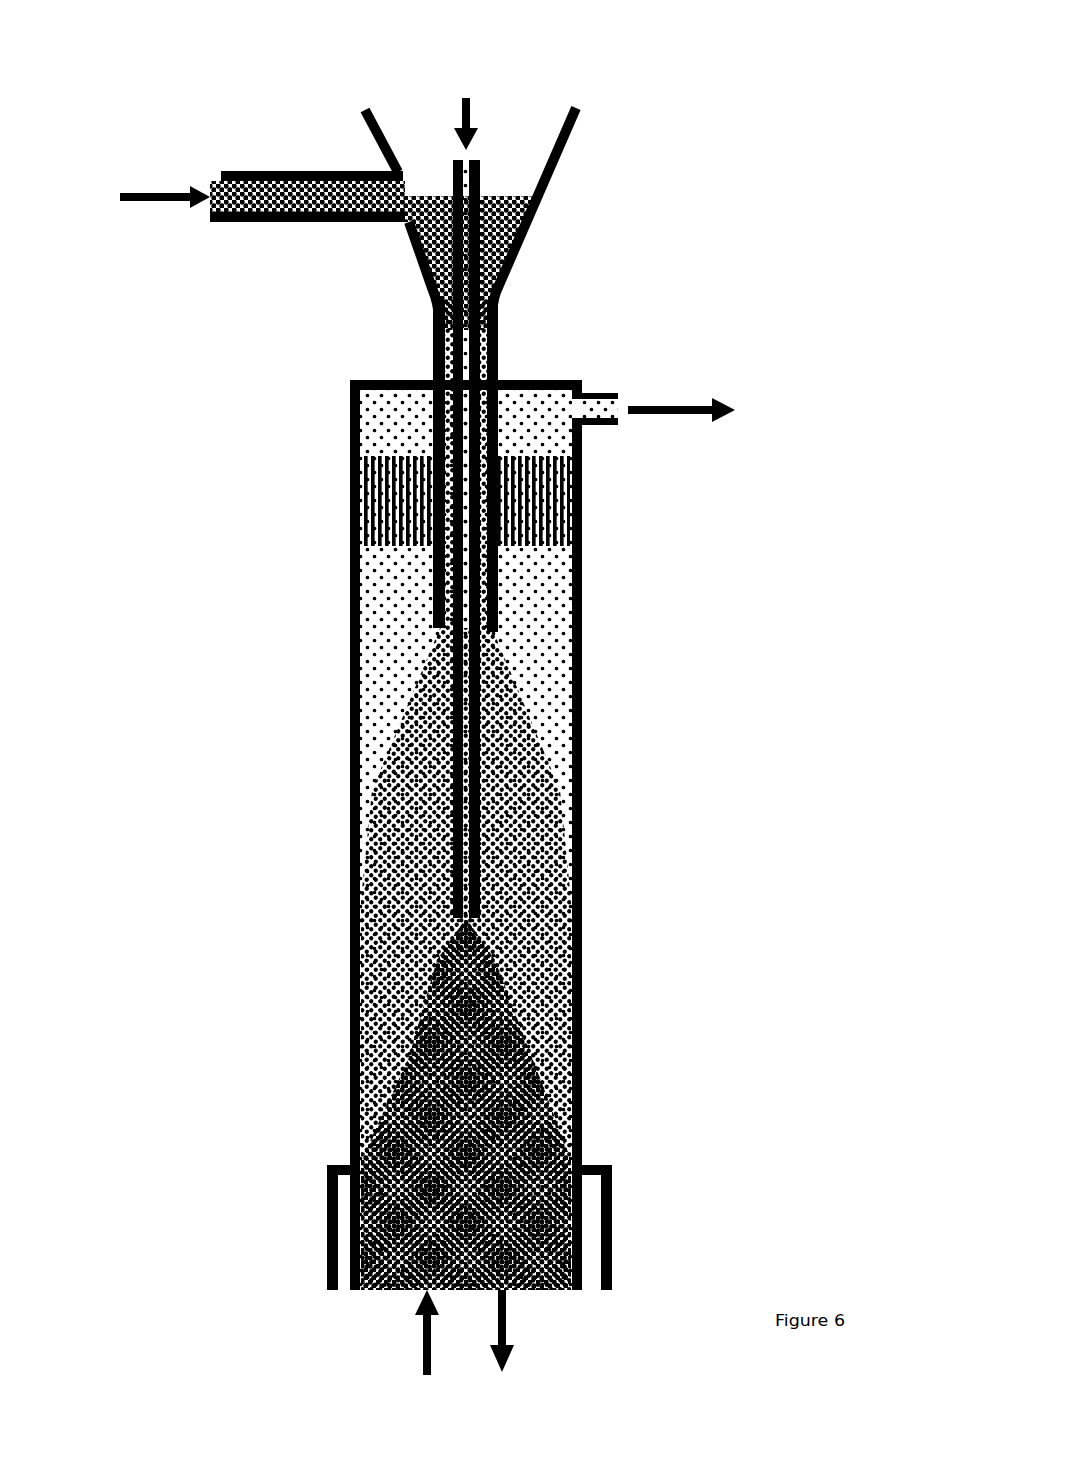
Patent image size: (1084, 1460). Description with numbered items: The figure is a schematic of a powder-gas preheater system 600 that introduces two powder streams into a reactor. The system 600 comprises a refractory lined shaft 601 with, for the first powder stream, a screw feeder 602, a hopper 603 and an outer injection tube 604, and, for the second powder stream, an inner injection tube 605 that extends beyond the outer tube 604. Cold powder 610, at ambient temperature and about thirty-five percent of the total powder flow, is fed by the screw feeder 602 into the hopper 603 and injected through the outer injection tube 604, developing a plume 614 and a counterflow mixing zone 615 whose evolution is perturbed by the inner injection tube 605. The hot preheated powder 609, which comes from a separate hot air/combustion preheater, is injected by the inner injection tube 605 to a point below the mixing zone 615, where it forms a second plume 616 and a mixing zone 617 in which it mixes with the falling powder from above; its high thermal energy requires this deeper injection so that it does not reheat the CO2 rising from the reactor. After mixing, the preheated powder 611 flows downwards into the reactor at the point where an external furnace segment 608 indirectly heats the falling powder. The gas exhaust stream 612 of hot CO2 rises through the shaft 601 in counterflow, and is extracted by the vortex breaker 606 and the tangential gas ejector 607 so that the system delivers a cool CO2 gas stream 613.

The powder-gas preheater system 600 is at (664, 620).
The refractory lined shaft 601 is at (588, 913).
The screw feeder 602 is at (307, 210).
The hopper 603 is at (526, 219).
The outer injection tube 604 is at (504, 602).
The inner injection tube 605 is at (494, 816).
The vortex breaker 606 is at (405, 501).
The tangential gas ejector 607 is at (599, 386).
The furnace segment 608 is at (390, 1227).
The hot preheated powder 609 is at (471, 76).
The second powder stream (cold powder) 610 is at (158, 163).
The hot preheated powder stream 611 is at (572, 1331).
The gas exhaust stream 612 is at (374, 1332).
The cool CO2 gas stream 613 is at (709, 396).
The plume 614 is at (412, 738).
The counterflow mixing zone 615 is at (392, 868).
The second plume 616 is at (417, 1056).
The mixing zone 617 is at (399, 1160).